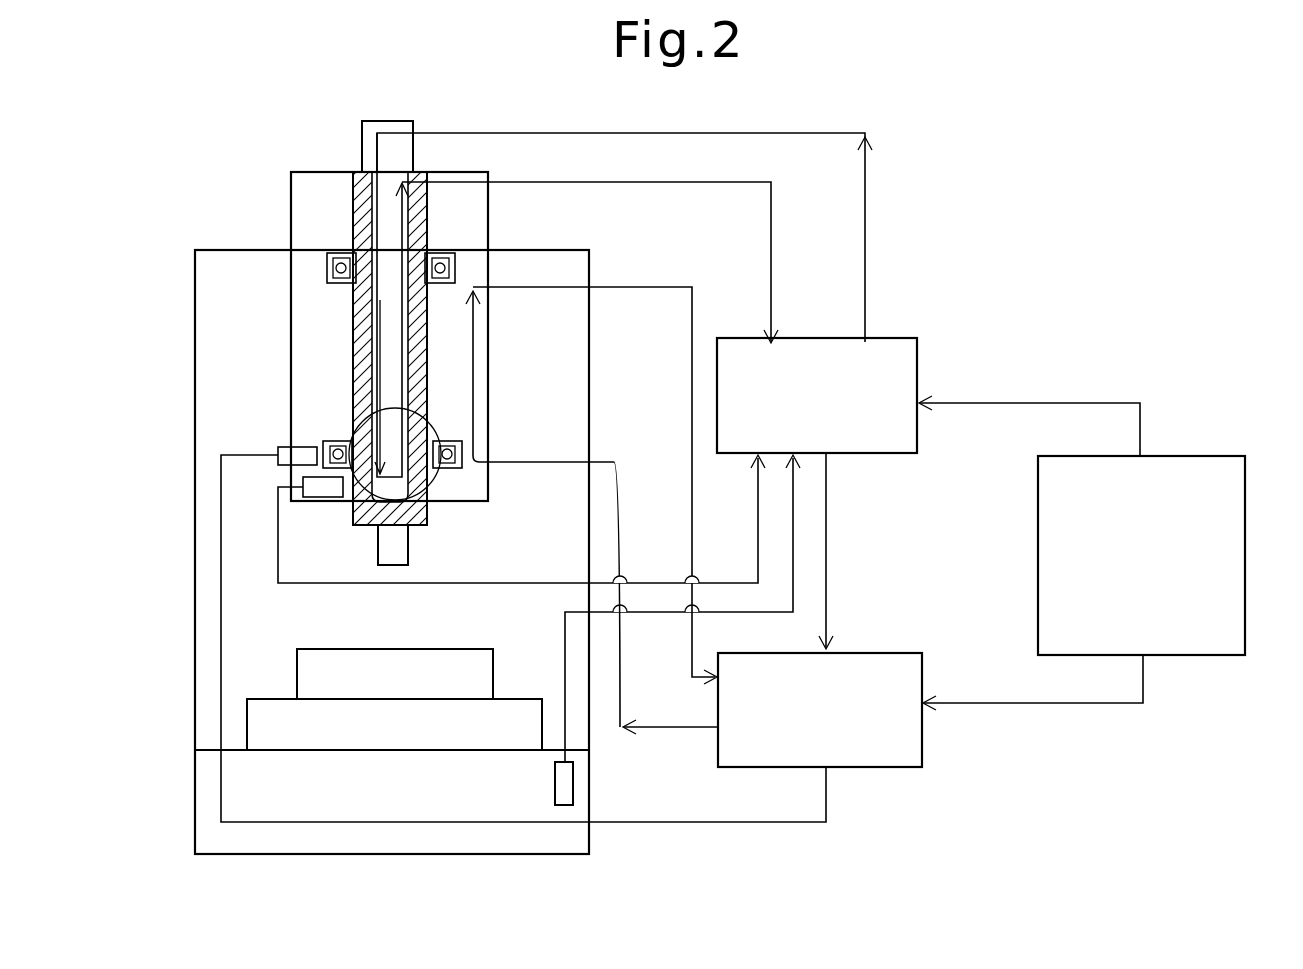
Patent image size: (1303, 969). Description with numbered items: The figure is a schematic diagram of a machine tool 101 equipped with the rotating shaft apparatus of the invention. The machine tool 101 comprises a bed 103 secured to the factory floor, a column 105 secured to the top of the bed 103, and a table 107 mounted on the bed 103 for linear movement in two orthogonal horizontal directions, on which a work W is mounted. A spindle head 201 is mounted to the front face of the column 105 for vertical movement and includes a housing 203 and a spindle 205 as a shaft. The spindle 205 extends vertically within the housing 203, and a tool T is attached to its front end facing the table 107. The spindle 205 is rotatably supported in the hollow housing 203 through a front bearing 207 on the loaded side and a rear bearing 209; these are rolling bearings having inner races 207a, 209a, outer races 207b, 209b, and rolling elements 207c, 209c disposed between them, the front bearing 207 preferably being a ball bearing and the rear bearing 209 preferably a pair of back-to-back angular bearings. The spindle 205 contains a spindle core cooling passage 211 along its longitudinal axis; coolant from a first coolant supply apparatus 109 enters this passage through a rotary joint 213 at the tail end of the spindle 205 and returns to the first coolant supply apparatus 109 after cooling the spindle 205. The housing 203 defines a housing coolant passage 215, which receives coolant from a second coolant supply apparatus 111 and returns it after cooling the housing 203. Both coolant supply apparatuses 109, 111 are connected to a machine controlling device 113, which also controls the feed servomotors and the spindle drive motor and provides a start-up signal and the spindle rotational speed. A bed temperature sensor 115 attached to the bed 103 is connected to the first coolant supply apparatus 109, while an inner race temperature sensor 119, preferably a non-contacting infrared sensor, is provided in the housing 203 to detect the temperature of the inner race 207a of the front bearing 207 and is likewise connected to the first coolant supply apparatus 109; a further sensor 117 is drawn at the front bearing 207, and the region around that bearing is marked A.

The machine tool 101 is at (626, 120).
The spindle head 201 is at (178, 161).
The bed 103 is at (206, 803).
The column 105 is at (200, 558).
The table 107 is at (320, 740).
The first coolant supply apparatus 109 is at (897, 338).
The second coolant supply apparatus 111 is at (915, 652).
The machine controlling device 113 is at (1182, 456).
The bed temperature sensor 115 is at (555, 788).
The temperature sensor 117 is at (328, 498).
The inner race temperature sensor 119 is at (286, 447).
The housing 203 is at (293, 243).
The spindle 205 is at (357, 345).
The bearing 207 is at (338, 441).
The inner race 207a is at (437, 418).
The outer race 207b is at (460, 452).
The rolling elements 207c is at (462, 465).
The bearing 209 is at (340, 252).
The inner race 209a is at (430, 253).
The outer race 209b is at (448, 268).
The rolling elements 209c is at (440, 258).
The spindle core cooling passage 211 is at (404, 287).
The rotary joint 213 is at (380, 120).
The housing coolant passage 215 is at (475, 337).
The bearing region A is at (427, 507).
The tool T is at (408, 545).
The work W is at (495, 658).